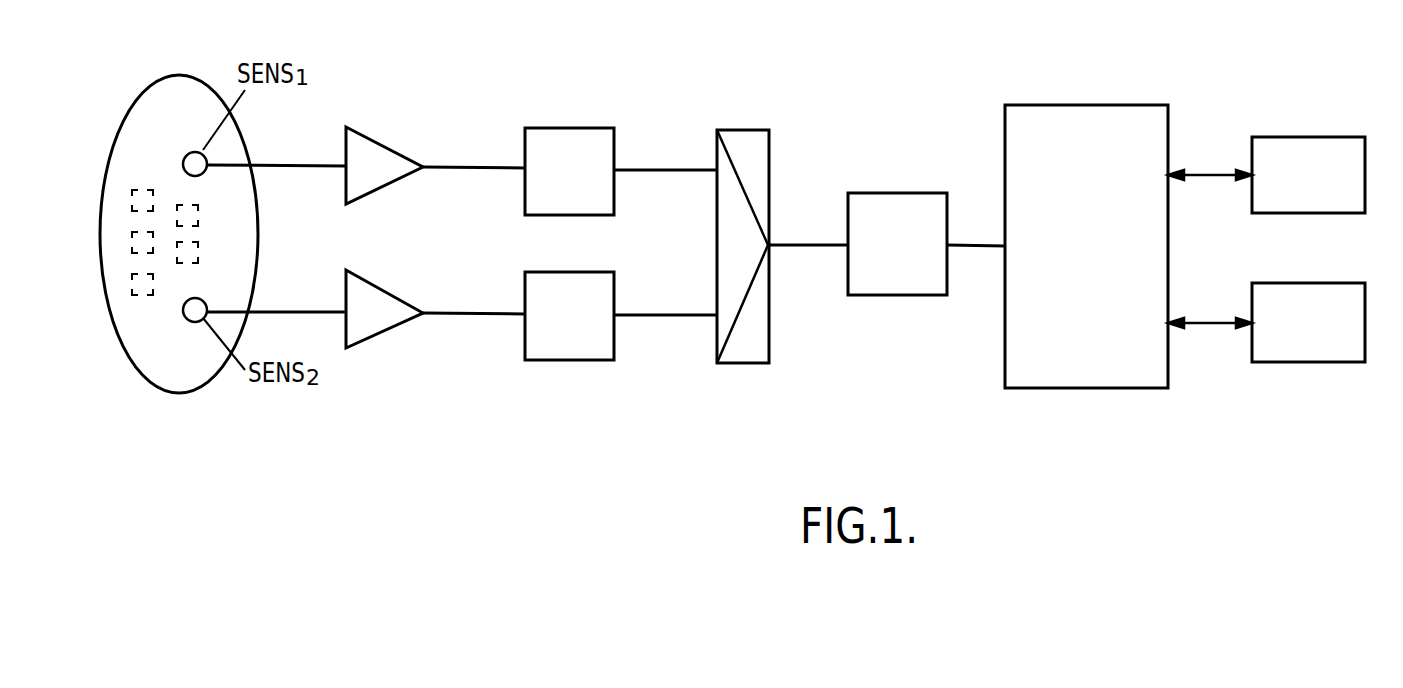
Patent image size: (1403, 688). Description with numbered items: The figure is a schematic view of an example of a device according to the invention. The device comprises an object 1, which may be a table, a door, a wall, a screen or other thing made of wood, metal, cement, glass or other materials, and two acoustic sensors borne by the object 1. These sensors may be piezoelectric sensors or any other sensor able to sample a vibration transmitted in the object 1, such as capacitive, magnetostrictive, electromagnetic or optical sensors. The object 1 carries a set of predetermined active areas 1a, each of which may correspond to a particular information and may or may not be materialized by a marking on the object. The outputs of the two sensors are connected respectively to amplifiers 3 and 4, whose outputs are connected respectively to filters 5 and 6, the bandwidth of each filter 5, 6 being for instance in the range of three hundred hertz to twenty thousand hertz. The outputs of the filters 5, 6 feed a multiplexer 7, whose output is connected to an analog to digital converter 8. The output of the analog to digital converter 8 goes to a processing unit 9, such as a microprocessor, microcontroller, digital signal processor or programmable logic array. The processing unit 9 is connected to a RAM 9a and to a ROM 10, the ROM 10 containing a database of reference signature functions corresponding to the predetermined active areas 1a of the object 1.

The object 1 is at (167, 393).
The active areas 1a is at (132, 202).
The amplifier 3 is at (383, 143).
The amplifier 4 is at (370, 337).
The filter 5 is at (567, 127).
The filter 6 is at (568, 360).
The multiplexer 7 is at (738, 365).
The analog to digital converter 8 is at (895, 297).
The processing unit 9 is at (1090, 390).
The RAM 9a is at (1310, 363).
The ROM 10 is at (1302, 137).